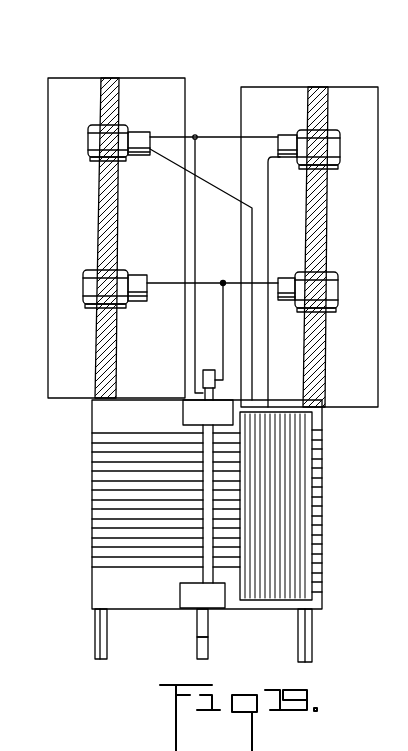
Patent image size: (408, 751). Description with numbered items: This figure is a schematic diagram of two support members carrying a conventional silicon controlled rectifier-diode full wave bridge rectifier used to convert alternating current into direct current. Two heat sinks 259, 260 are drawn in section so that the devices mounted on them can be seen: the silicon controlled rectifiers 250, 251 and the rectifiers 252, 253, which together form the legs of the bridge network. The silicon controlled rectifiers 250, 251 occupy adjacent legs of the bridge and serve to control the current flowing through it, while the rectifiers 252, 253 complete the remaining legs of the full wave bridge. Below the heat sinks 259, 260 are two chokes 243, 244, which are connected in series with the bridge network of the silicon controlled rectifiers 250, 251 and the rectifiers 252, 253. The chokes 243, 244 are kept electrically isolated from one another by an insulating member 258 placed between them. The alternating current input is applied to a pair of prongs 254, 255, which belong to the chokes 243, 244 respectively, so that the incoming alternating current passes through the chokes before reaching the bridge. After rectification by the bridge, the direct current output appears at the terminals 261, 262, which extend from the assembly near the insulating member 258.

The choke 243 is at (92, 517).
The choke 244 is at (322, 500).
The silicon controlled rectifier 250 is at (138, 138).
The silicon controlled rectifier 251 is at (282, 135).
The rectifier 252 is at (140, 276).
The rectifier 253 is at (296, 277).
The prong 254 is at (96, 644).
The prong 255 is at (312, 645).
The insulating member 258 is at (198, 568).
The heat sink 259 is at (110, 83).
The heat sink 260 is at (316, 87).
The terminal 261 is at (199, 647).
The terminal 262 is at (197, 627).